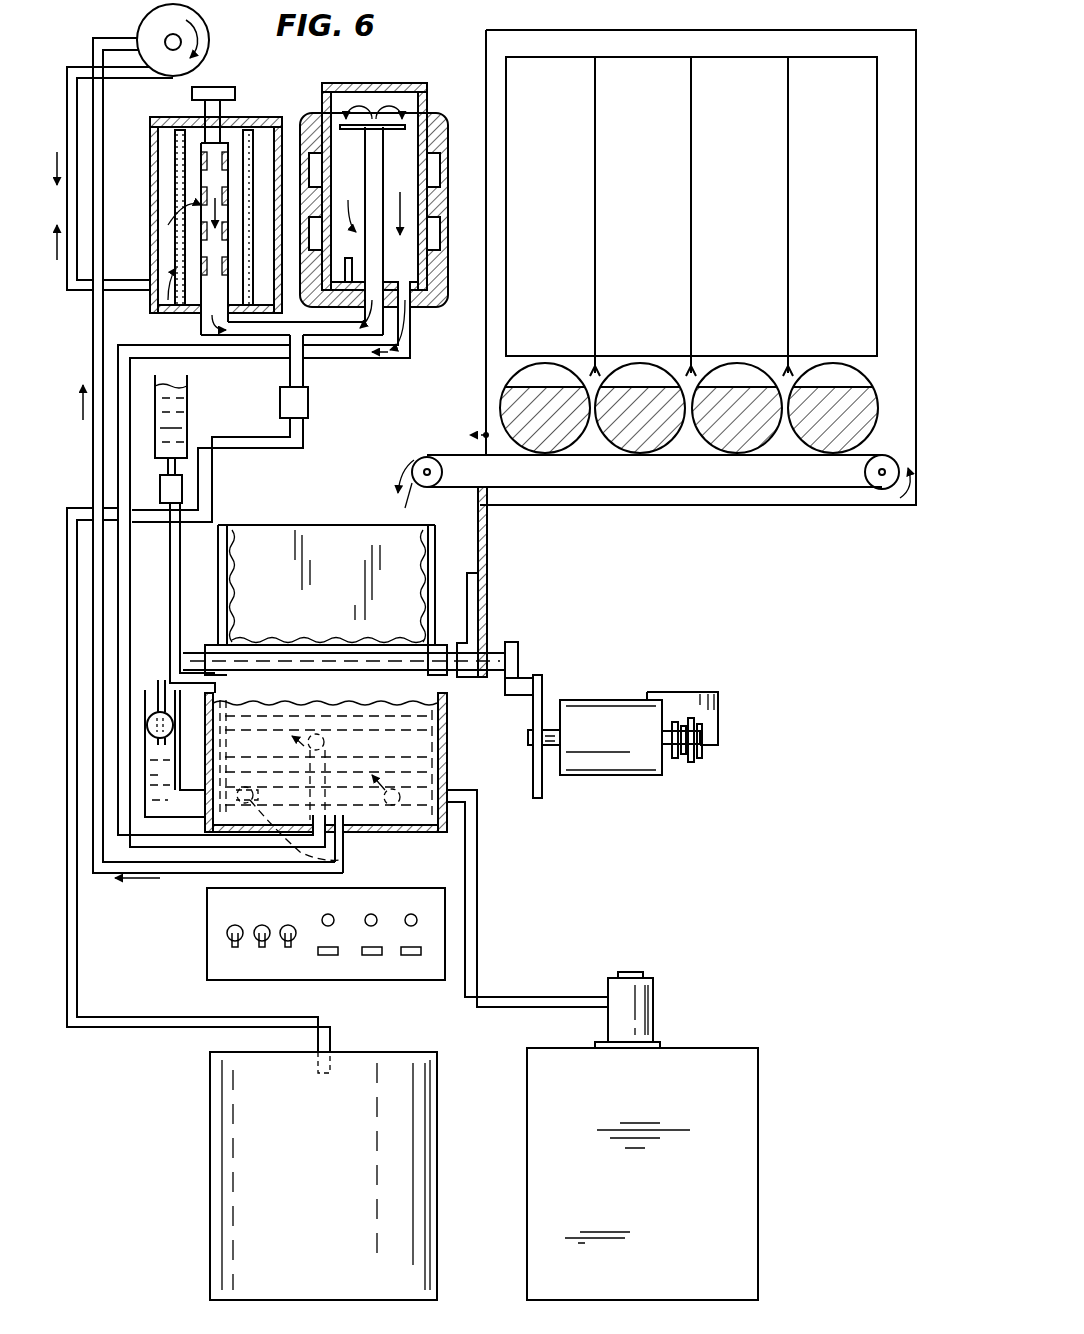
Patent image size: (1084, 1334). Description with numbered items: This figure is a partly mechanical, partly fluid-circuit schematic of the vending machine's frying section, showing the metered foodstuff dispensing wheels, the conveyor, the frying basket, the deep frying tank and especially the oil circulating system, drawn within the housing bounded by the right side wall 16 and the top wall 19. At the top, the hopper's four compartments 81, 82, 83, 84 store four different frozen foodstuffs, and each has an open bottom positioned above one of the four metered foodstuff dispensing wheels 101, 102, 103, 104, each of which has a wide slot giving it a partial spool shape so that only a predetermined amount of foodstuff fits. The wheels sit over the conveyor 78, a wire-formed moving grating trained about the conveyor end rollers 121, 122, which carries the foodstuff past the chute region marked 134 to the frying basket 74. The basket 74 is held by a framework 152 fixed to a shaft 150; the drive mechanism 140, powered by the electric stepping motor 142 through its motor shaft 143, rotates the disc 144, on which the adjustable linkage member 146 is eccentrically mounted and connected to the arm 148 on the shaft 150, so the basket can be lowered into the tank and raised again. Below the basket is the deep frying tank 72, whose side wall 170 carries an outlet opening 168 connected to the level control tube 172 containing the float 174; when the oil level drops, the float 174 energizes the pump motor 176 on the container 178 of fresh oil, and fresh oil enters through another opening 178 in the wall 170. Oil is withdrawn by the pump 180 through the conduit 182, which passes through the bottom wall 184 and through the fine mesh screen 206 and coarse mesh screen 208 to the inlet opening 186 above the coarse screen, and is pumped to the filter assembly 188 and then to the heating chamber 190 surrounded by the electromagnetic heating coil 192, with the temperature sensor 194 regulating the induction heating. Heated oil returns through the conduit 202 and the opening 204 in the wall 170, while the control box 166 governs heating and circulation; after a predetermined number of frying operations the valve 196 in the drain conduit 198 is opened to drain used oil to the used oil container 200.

The right side wall 16 is at (914, 168).
The top wall 19 is at (700, 47).
The compartment 81 is at (550, 62).
The compartment 82 is at (645, 62).
The compartment 83 is at (764, 62).
The compartment 84 is at (860, 62).
The metered foodstuff dispensing wheel 101 is at (565, 456).
The metered foodstuff dispensing wheel 102 is at (657, 456).
The metered foodstuff dispensing wheel 103 is at (751, 456).
The metered foodstuff dispensing wheel 104 is at (851, 456).
The conveyor 78 is at (880, 448).
The conveyor end roller 121 is at (420, 458).
The conveyor end roller 122 is at (897, 468).
The chute wall 134 is at (486, 342).
The frying basket 74 is at (434, 570).
The shaft 150 is at (384, 670).
The framework 152 is at (210, 645).
The arm 148 is at (512, 645).
The adjustable linkage member 146 is at (522, 685).
The disc 144 is at (540, 688).
The motor shaft 143 is at (548, 733).
The electric stepping motor 142 is at (614, 778).
The drive mechanism 140 is at (680, 776).
The side wall 170 is at (448, 765).
The deep frying tank 72 is at (447, 712).
The opening 204 is at (318, 735).
The coarse mesh screen 208 is at (229, 735).
The inlet opening 186 is at (342, 805).
The container of fresh oil 178 is at (397, 792).
The outlet opening 168 is at (236, 806).
The fine mesh screen 206 is at (343, 862).
The bottom wall 184 is at (400, 836).
The control box 166 is at (447, 952).
The pump motor 176 is at (655, 1002).
The used oil container 200 is at (222, 1135).
The conduit 202 is at (118, 440).
The drain conduit 198 is at (263, 447).
The valve 196 is at (282, 404).
The temperature sensor 194 is at (353, 336).
The heating chamber 190 is at (389, 84).
The electromagnetic heating coil 192 is at (446, 117).
The filter assembly 188 is at (236, 87).
The pump 180 is at (203, 14).
The conduit 182 is at (93, 342).
The level control tube 172 is at (145, 775).
The float 174 is at (148, 718).